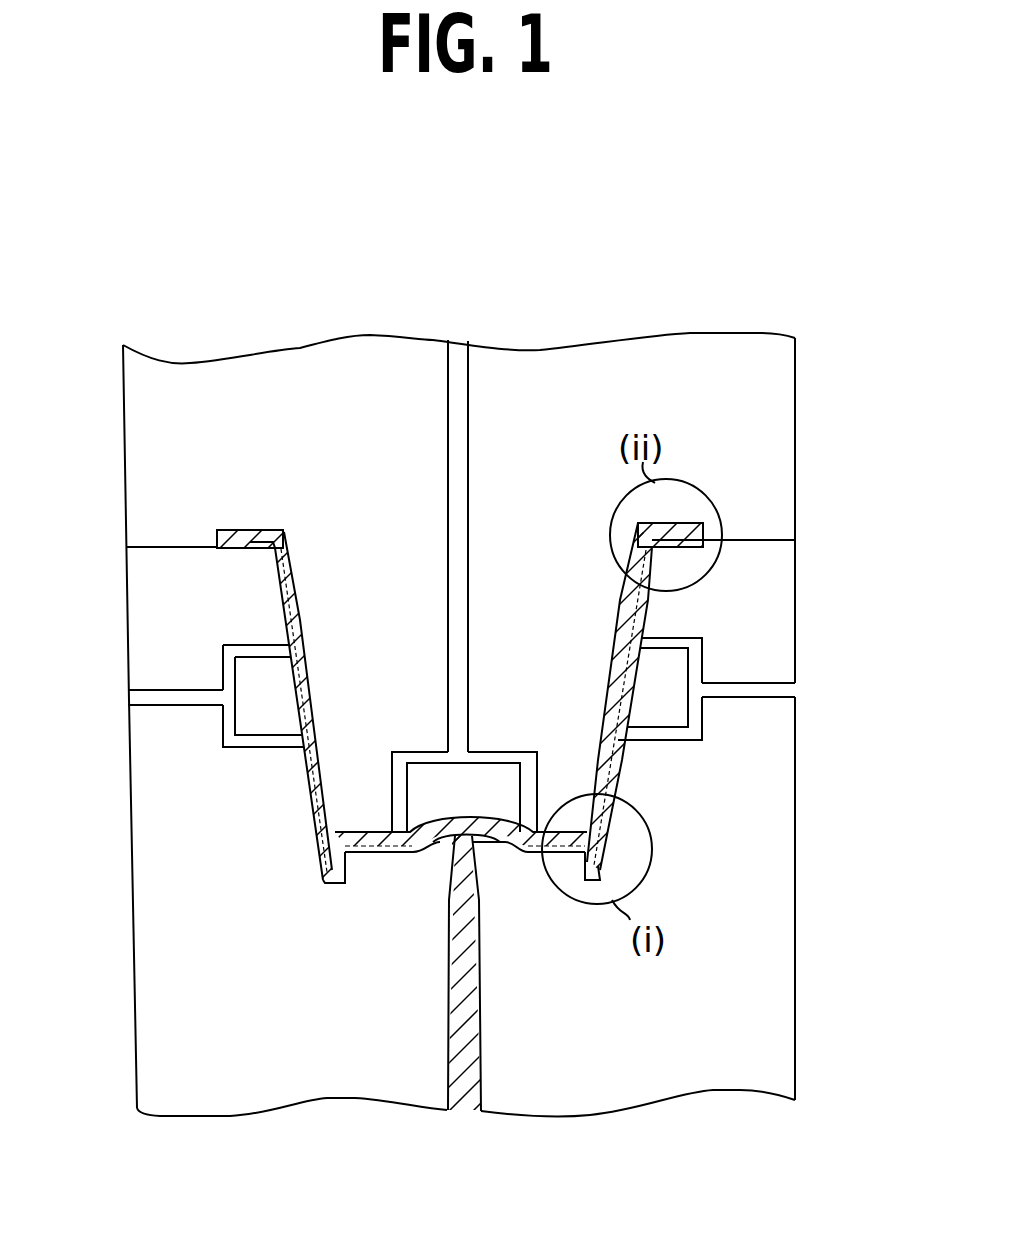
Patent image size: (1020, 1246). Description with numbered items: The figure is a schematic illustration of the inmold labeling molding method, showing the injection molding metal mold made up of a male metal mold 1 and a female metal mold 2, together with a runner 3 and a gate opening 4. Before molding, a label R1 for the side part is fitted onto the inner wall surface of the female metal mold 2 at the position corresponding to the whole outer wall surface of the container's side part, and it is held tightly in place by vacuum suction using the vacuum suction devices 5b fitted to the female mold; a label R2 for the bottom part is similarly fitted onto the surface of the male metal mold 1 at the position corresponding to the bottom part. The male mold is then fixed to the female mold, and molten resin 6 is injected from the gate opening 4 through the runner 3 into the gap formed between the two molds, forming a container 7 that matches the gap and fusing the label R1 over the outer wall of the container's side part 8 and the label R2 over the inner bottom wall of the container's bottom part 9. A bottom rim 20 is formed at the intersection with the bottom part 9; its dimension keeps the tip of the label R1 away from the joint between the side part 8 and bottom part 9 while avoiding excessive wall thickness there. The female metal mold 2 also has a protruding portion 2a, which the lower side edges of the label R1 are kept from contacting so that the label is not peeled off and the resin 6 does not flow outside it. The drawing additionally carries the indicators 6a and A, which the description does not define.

The male metal mold 1 is at (768, 420).
The female metal mold 2 is at (766, 930).
The protruding portion of the female metal mold 2a is at (374, 879).
The runner 3 is at (445, 985).
The gate opening 4 is at (480, 863).
The vacuum suction devices 5b is at (167, 705).
The molten resin 6 is at (615, 650).
The resin runner 6a is at (470, 403).
The container 7 is at (288, 528).
The container's side part 8 is at (607, 692).
The container's bottom part 9 is at (367, 830).
The bottom rim 20 is at (310, 889).
The label for the side part R1 is at (278, 605).
The label for the bottom part R2 is at (413, 853).
The molding assembly A is at (829, 676).